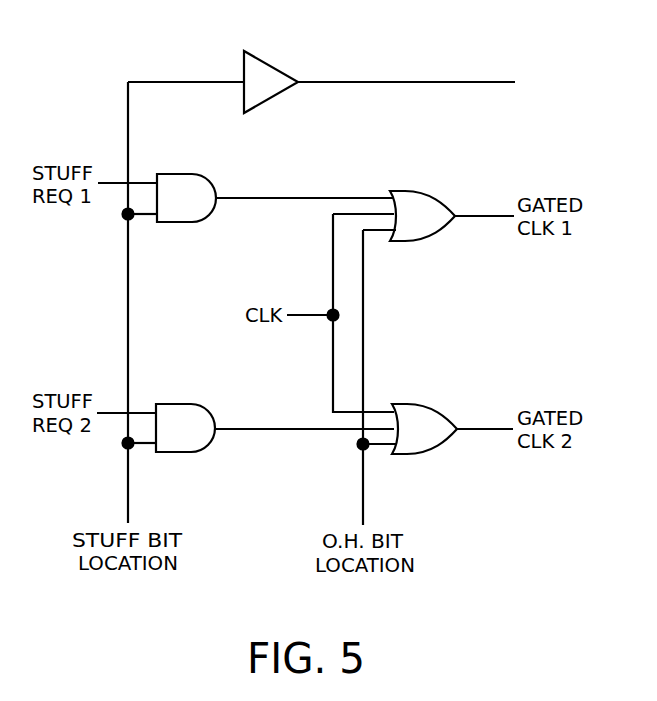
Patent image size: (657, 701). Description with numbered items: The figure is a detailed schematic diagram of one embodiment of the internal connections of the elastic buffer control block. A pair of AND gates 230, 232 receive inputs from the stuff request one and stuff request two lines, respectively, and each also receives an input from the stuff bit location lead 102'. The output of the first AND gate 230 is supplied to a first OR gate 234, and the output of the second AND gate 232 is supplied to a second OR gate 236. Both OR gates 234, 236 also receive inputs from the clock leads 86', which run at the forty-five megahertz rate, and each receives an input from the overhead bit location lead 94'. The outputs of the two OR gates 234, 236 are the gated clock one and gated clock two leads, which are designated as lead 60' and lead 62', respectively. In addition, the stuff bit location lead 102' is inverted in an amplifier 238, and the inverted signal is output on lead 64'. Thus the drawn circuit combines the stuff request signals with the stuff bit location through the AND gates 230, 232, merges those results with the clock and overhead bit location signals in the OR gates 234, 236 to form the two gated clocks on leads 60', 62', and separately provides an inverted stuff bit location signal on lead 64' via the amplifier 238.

The amplifier 238 is at (272, 66).
The lead 64' is at (406, 107).
The AND gate 230 is at (192, 174).
The OR gate 234 is at (425, 241).
The gated clock 1 lead 60' is at (484, 190).
The clock lead 86' is at (340, 313).
The overhead bit location lead 94' is at (390, 377).
The AND gate 232 is at (190, 404).
The OR gate 236 is at (425, 404).
The gated clock 2 lead 62' is at (485, 405).
The stuff bit location lead 102' is at (184, 302).